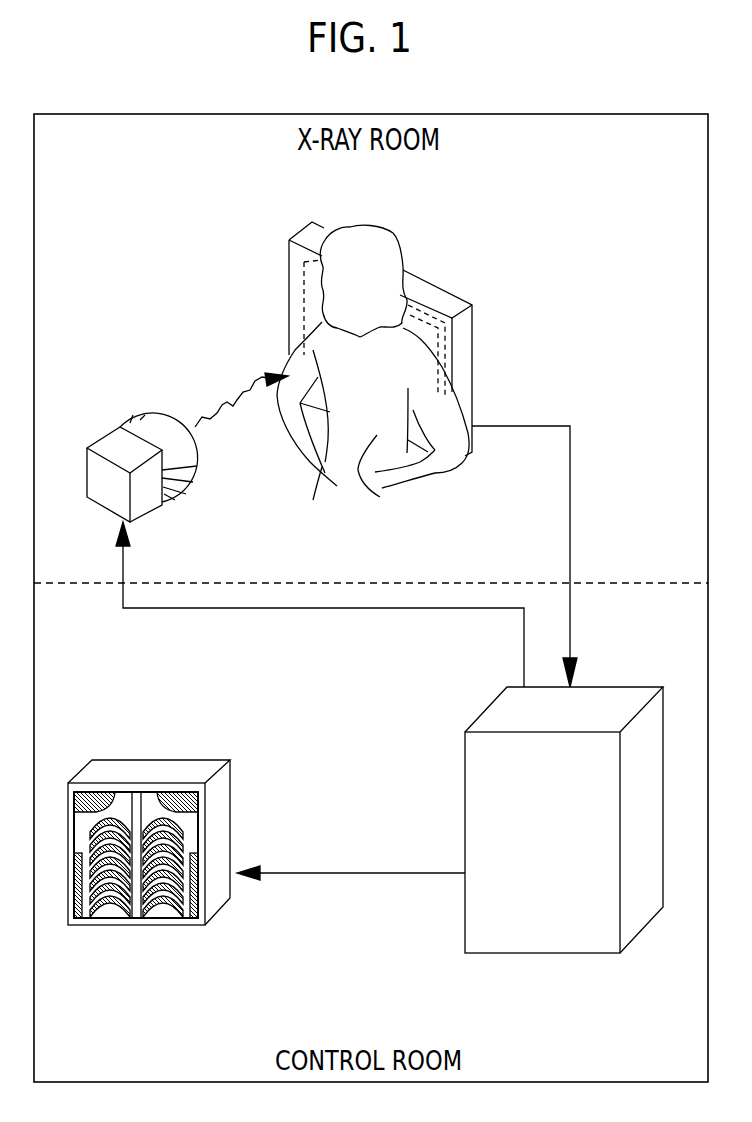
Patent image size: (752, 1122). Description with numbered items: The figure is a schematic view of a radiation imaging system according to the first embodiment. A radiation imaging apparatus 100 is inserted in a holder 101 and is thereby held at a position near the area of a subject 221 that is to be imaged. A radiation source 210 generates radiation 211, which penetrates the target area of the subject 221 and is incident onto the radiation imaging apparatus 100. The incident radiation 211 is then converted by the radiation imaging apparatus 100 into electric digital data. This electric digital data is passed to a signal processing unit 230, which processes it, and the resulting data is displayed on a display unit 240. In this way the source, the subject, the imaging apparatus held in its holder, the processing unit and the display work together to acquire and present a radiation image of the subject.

The radiation imaging apparatus 100 is at (427, 325).
The holder 101 is at (289, 297).
The radiation source 210 is at (113, 443).
The radiation 211 is at (234, 412).
The subject 221 is at (380, 497).
The signal processing unit 230 is at (478, 923).
The display unit 240 is at (172, 768).